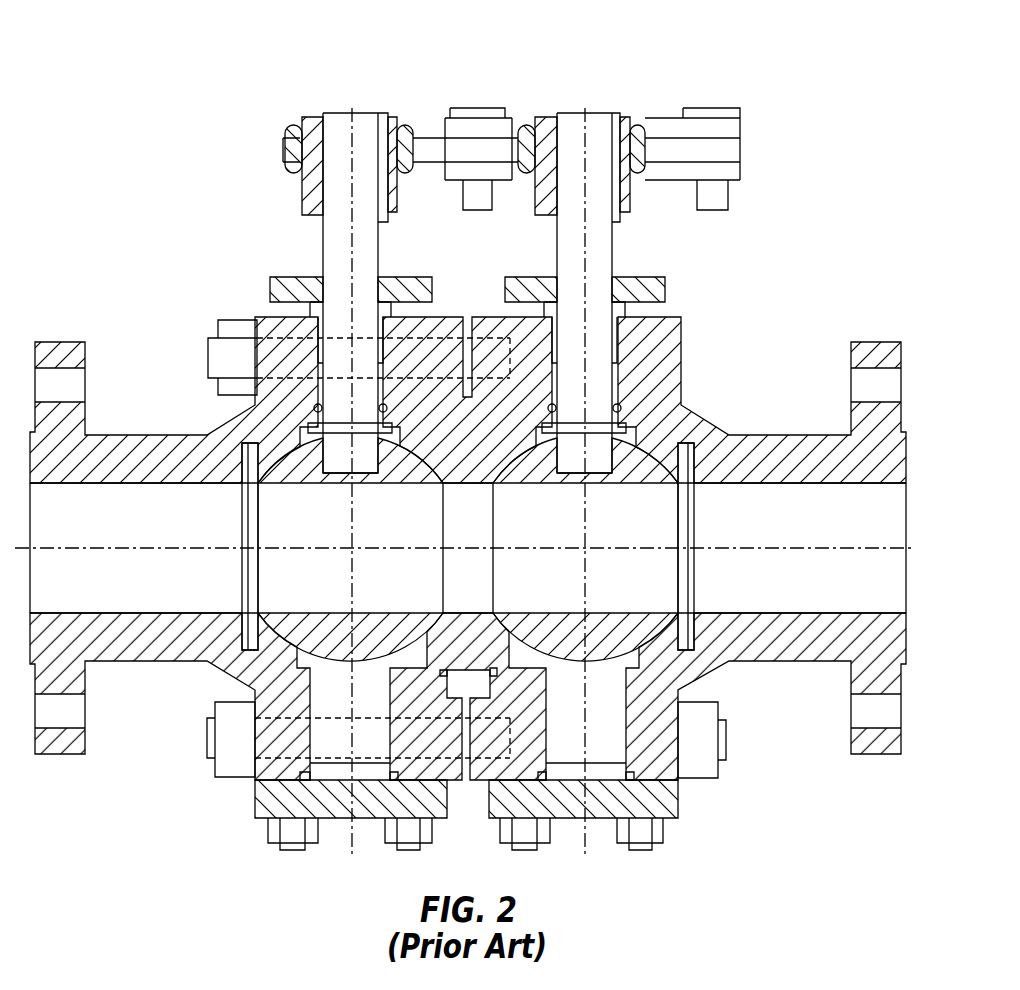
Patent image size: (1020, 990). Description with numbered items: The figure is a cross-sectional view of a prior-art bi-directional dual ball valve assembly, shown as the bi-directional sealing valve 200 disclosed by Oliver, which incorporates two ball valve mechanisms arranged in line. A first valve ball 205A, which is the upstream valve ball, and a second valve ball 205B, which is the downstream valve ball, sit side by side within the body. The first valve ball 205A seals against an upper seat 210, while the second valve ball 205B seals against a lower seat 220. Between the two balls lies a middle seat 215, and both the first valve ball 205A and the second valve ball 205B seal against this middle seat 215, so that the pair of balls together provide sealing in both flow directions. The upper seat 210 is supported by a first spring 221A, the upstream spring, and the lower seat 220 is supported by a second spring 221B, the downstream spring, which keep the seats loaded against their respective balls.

The bi-directional sealing valve 200 is at (465, 481).
The first valve ball 205A is at (634, 473).
The second valve ball 205B is at (404, 470).
The upper seat 210 is at (667, 633).
The middle seat 215 is at (463, 633).
The lower seat 220 is at (270, 637).
The first spring 221A is at (700, 633).
The second spring 221B is at (242, 632).